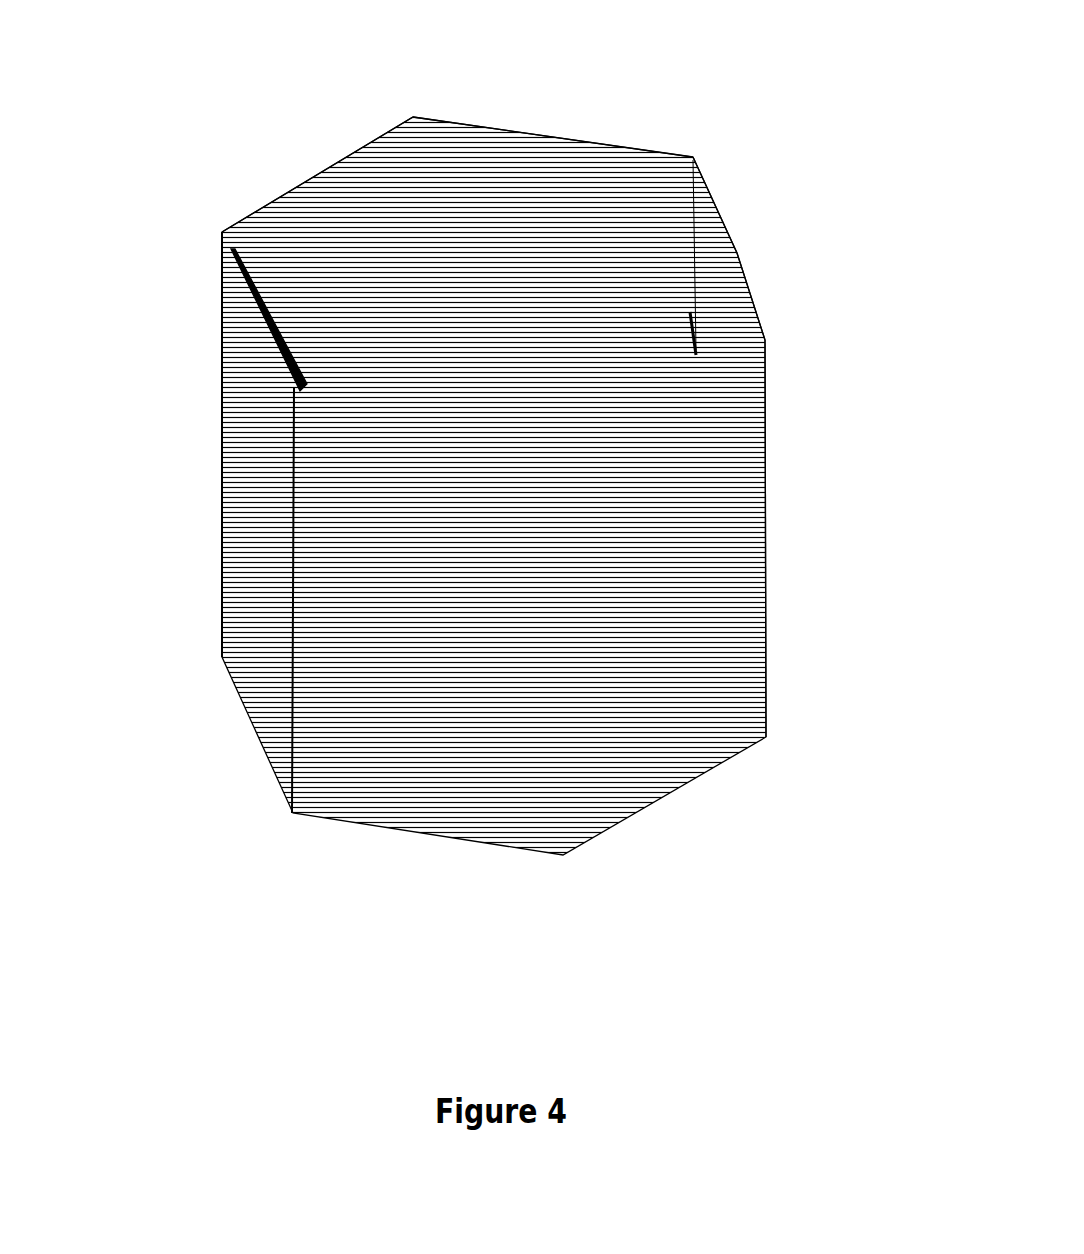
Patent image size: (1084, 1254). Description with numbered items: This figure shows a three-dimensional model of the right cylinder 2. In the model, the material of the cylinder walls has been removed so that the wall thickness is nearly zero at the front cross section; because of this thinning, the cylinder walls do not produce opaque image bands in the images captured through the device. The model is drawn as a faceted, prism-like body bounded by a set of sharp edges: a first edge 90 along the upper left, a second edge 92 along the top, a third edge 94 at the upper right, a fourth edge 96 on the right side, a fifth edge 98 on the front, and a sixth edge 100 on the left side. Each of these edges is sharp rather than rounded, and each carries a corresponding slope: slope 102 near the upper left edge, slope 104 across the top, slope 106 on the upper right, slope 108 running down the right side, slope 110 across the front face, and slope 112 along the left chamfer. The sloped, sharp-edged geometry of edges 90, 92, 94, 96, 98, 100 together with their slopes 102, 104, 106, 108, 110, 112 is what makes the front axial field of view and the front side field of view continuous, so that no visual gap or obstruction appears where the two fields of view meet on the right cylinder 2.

The right cylinder 2 is at (713, 735).
The edge 90 is at (310, 178).
The edge 92 is at (552, 137).
The edge 94 is at (737, 253).
The edge 96 is at (677, 365).
The edge 98 is at (428, 412).
The edge 100 is at (260, 315).
The slope 102 is at (292, 240).
The slope 104 is at (477, 180).
The slope 106 is at (687, 253).
The slope 108 is at (662, 393).
The slope 110 is at (450, 438).
The slope 112 is at (283, 350).